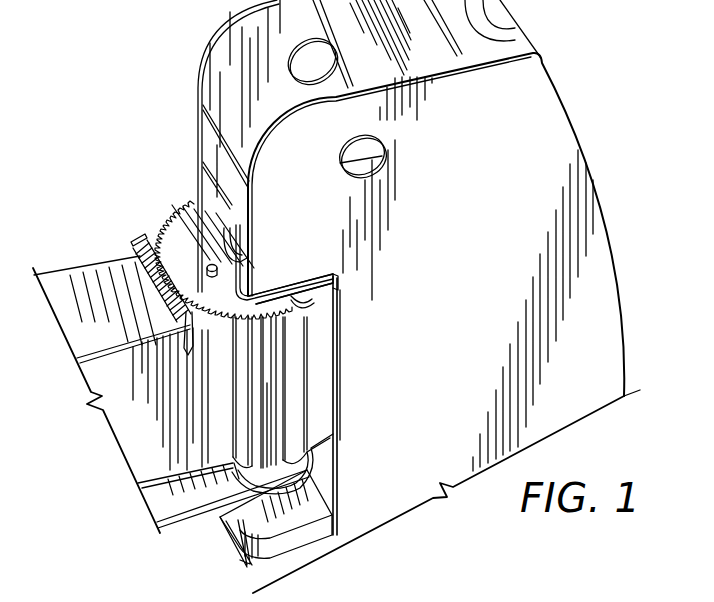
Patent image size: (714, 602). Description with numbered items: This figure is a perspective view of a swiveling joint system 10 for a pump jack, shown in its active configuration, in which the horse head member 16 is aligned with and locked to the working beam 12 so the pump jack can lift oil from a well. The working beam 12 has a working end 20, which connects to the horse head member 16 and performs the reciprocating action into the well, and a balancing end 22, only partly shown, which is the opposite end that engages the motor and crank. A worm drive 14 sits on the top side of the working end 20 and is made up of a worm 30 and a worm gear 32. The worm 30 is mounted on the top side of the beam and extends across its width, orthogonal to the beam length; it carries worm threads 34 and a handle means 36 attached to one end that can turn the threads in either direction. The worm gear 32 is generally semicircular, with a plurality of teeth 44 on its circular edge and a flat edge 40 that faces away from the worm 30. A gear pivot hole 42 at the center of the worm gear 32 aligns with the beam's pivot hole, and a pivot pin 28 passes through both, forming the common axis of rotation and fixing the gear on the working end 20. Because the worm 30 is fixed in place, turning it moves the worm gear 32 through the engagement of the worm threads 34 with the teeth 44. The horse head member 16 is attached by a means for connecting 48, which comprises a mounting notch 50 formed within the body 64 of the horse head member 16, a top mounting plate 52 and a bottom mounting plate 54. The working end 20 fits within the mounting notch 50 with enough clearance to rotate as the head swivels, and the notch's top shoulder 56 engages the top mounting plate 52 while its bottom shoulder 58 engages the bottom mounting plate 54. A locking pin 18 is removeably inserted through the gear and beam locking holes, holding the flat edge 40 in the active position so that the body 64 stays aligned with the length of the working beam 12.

The swiveling joint system 10 is at (190, 53).
The working beam 12 is at (160, 507).
The worm drive 14 is at (138, 262).
The horse head member 16 is at (540, 94).
The locking pin 18 is at (240, 256).
The working end 20 is at (297, 465).
The balancing end 22 is at (137, 484).
The pivot pin 28 is at (254, 231).
The worm 30 is at (152, 288).
The worm gear 32 is at (160, 234).
The worm threads 34 is at (140, 247).
The handle means 36 is at (186, 342).
The flat edge 40 is at (313, 302).
The gear pivot hole 42 is at (170, 232).
The teeth 44 is at (200, 198).
The means for connecting 48 is at (333, 272).
The mounting notch 50 is at (338, 378).
The top mounting plate 52 is at (327, 280).
The bottom mounting plate 54 is at (250, 552).
The top shoulder 56 is at (338, 288).
The bottom shoulder 58 is at (334, 532).
The body 64 is at (415, 507).